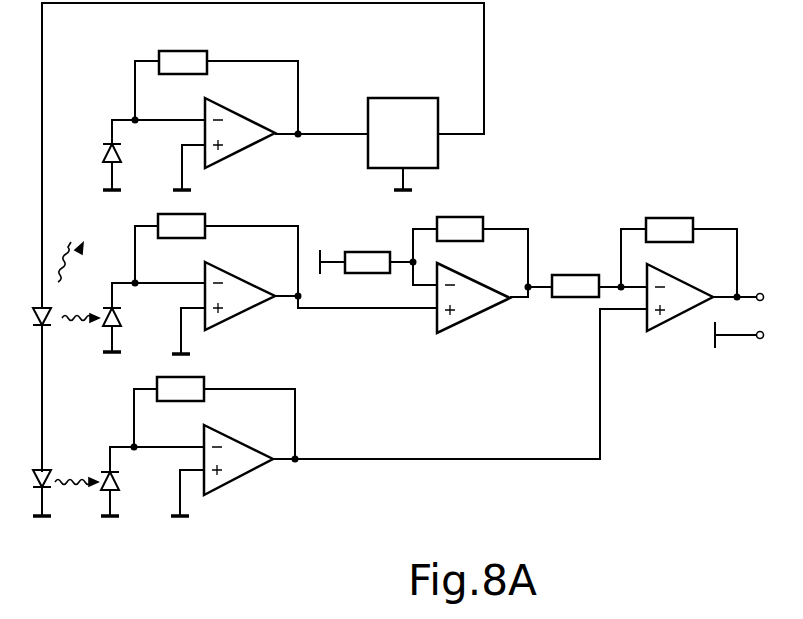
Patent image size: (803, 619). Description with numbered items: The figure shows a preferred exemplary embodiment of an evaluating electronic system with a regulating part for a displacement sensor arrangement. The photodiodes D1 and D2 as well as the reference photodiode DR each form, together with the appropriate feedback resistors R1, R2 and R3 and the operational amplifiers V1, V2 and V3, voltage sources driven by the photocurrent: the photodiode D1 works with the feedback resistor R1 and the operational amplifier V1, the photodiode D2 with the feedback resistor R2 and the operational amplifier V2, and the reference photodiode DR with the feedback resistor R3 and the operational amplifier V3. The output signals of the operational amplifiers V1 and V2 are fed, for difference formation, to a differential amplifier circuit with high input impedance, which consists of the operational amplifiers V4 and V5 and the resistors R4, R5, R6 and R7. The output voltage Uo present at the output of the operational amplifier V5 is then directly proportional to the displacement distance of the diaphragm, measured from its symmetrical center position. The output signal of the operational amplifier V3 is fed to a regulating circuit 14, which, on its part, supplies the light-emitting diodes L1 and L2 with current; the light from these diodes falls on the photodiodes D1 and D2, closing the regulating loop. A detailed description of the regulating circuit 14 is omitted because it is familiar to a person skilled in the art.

The feedback resistor R1 is at (183, 388).
The feedback resistor R2 is at (187, 225).
The feedback resistor R3 is at (176, 60).
The resistor R4 is at (365, 262).
The resistor R5 is at (460, 228).
The resistor R6 is at (572, 285).
The resistor R7 is at (668, 228).
The operational amplifier V1 is at (230, 470).
The operational amplifier V2 is at (240, 292).
The operational amplifier V3 is at (240, 142).
The operational amplifier V4 is at (465, 305).
The operational amplifier V5 is at (678, 306).
The photodiode D1 is at (124, 485).
The photodiode D2 is at (123, 318).
The reference photodiode DR is at (104, 156).
The light-emitting diode L1 is at (50, 483).
The light-emitting diode L2 is at (47, 320).
The regulating circuit 14 is at (418, 145).
The output voltage Uo is at (757, 316).